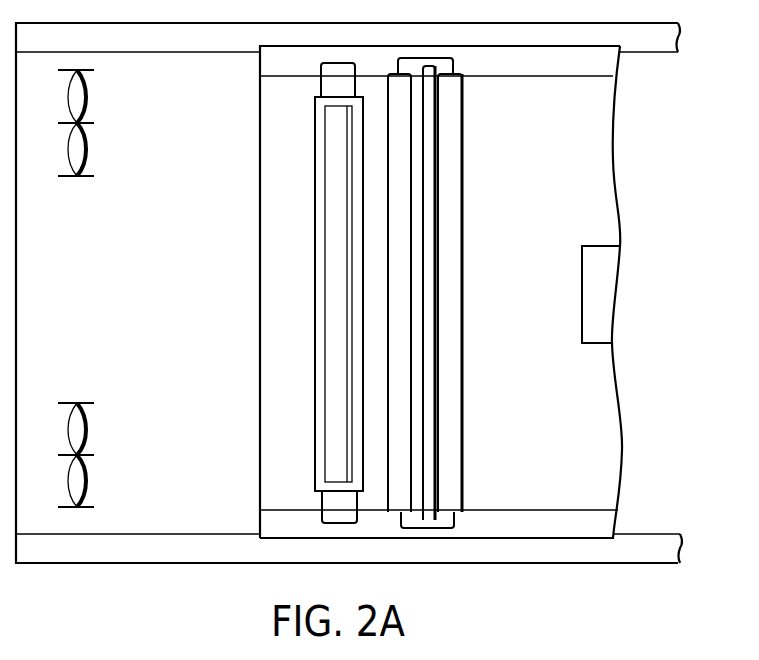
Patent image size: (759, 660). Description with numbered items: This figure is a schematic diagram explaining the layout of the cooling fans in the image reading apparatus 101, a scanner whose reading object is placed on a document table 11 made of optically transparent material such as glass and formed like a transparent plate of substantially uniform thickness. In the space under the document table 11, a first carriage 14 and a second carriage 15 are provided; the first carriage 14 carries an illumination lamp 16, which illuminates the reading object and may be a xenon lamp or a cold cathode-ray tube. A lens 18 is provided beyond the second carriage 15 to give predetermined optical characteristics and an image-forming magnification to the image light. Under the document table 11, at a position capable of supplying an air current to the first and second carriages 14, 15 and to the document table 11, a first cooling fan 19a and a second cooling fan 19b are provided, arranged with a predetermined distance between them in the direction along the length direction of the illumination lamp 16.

The image reading apparatus 101 is at (678, 40).
The document table 11 is at (614, 161).
The first carriage 14 is at (462, 475).
The second carriage 15 is at (318, 446).
The illumination lamp 16 is at (433, 425).
The lens 18 is at (582, 283).
The first cooling fan 19a is at (86, 427).
The second cooling fan 19b is at (86, 146).